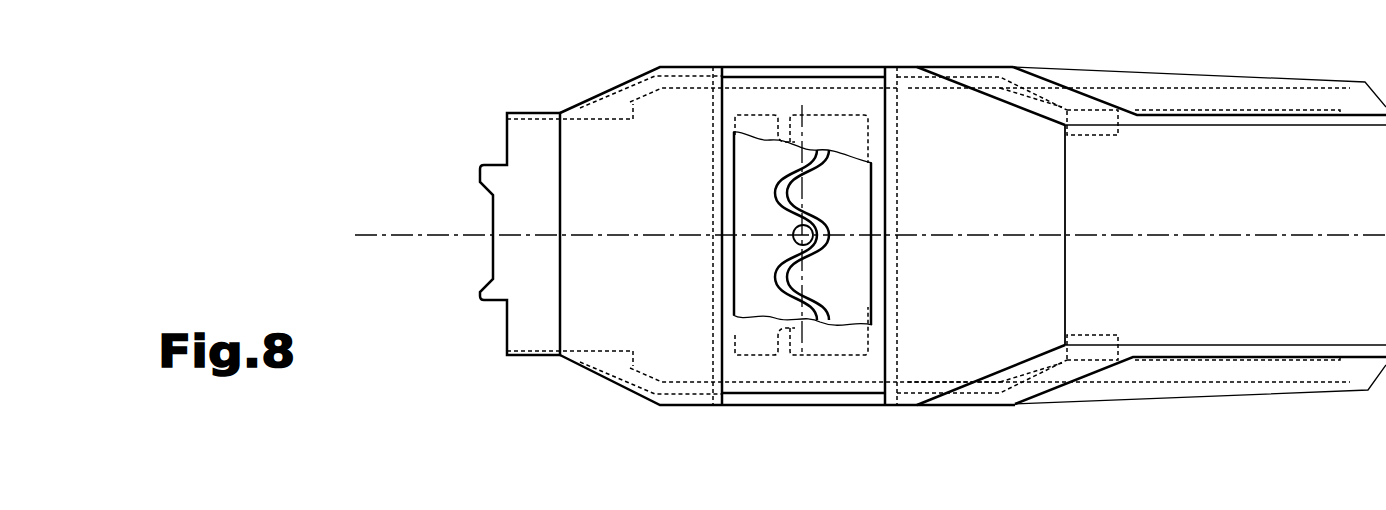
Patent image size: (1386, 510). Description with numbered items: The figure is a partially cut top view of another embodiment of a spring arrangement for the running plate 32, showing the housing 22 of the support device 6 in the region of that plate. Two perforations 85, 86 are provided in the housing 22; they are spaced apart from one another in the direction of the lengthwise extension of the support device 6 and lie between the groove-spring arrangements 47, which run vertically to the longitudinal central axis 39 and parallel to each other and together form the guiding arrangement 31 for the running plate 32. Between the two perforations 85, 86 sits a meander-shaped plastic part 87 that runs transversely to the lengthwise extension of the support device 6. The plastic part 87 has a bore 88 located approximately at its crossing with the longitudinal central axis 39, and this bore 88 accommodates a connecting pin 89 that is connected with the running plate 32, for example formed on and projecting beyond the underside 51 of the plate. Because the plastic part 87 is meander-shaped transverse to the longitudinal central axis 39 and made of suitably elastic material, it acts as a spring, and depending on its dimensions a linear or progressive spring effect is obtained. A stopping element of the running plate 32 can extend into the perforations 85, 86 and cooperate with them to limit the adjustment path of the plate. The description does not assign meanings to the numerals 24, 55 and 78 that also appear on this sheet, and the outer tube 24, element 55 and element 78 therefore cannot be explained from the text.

The support device 6 is at (686, 256).
The housing 22 is at (487, 234).
The outer tube 24 is at (1199, 206).
The guiding arrangement 31 is at (925, 204).
The running plate 32 is at (789, 206).
The longitudinal central axis 39 is at (870, 128).
The groove-spring arrangements 47 is at (991, 261).
The underside 51 is at (863, 232).
The igniter 55 is at (340, 19).
The connecting line 78 is at (521, 16).
The perforation 85 is at (685, 268).
The perforation 86 is at (915, 264).
The meander-shaped plastic part 87 is at (847, 303).
The bore 88 is at (802, 228).
The connecting pin 89 is at (725, 206).